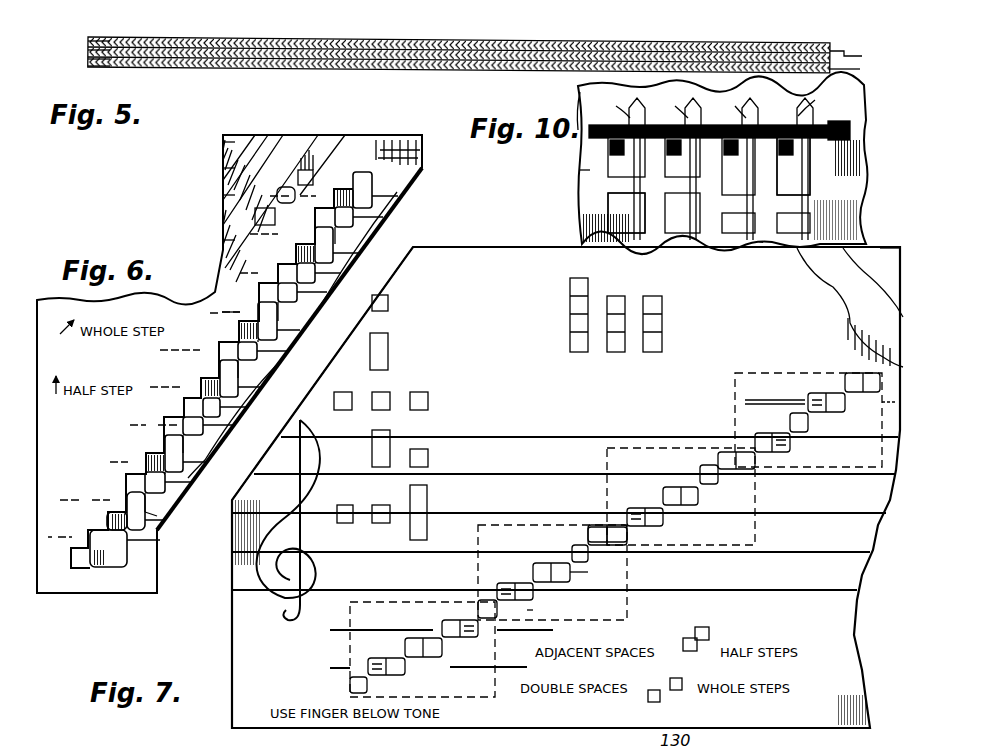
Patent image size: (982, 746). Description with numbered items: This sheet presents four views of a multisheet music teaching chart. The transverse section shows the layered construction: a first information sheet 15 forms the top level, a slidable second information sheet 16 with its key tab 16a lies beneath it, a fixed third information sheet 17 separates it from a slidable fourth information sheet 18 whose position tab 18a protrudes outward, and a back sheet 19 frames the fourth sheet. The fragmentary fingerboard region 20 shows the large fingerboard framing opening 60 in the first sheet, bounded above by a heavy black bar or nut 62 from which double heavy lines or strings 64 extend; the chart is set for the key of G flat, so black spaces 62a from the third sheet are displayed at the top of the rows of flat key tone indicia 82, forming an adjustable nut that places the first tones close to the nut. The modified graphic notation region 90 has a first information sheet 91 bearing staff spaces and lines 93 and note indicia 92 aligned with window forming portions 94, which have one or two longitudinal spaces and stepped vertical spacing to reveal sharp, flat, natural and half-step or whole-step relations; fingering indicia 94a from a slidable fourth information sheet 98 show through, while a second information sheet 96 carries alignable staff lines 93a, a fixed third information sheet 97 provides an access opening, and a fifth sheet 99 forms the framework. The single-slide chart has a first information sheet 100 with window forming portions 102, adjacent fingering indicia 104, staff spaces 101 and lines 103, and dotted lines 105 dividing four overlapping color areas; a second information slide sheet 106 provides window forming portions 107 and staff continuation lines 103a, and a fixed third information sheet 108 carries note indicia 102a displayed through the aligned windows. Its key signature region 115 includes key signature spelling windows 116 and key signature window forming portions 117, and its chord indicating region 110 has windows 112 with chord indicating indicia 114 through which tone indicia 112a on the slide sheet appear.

In FIG. 5, the first information sheet 15 is at (88, 39).
In FIG. 5, the second information sheet 16 is at (88, 44).
In FIG. 5, the third information sheet 17 is at (88, 52).
In FIG. 5, the fourth information sheet 18 is at (88, 60).
In FIG. 10, the fourth information sheet 18 is at (580, 170).
In FIG. 5, the back sheet 19 is at (88, 66).
In FIG. 5, the key tab 16a is at (862, 56).
In FIG. 5, the position tab 18a is at (860, 69).
In FIG. 10, the fingerboard region 20 is at (576, 84).
In FIG. 10, the fingerboard framing opening 60 is at (838, 214).
In FIG. 10, the nut 62 is at (592, 88).
In FIG. 10, the black spaces 62a is at (610, 146).
In FIG. 10, the strings 64 is at (808, 116).
In FIG. 10, the flat key tone indicia 82 is at (610, 200).
In FIG. 6, the graphic notation region 90 is at (348, 133).
In FIG. 6, the staff lines 93a is at (334, 188).
In FIG. 6, the fifth sheet 99 is at (223, 142).
In FIG. 6, the fourth information sheet 98 is at (223, 168).
In FIG. 6, the third information sheet 97 is at (223, 195).
In FIG. 6, the second information sheet 96 is at (223, 240).
In FIG. 6, the fingering indicia 94a is at (240, 312).
In FIG. 6, the first information sheet 91 is at (150, 522).
In FIG. 6, the staff spaces and lines 93 is at (158, 554).
In FIG. 6, the note indicia 92 is at (62, 560).
In FIG. 6, the window forming portions 94 is at (136, 562).
In FIG. 7, the first information sheet 100 is at (607, 433).
In FIG. 7, the second information slide sheet 106 is at (840, 303).
In FIG. 7, the third information sheet 108 is at (883, 250).
In FIG. 7, the key signature region 115 is at (482, 314).
In FIG. 7, the key signature spelling windows 116 is at (426, 392).
In FIG. 7, the key signature window forming portions 117 is at (428, 490).
In FIG. 7, the chord indicating region 110 is at (589, 315).
In FIG. 7, the windows 112 is at (570, 286).
In FIG. 7, the tone indicia 112a is at (570, 304).
In FIG. 7, the chord indicating indicia 114 is at (752, 290).
In FIG. 7, the lines 103 is at (832, 480).
In FIG. 7, the note indicia 102a is at (665, 532).
In FIG. 7, the spaces 101 is at (848, 537).
In FIG. 7, the dotted lines 105 is at (627, 612).
In FIG. 7, the fingering indicia 104 is at (527, 610).
In FIG. 7, the window forming portions 107 is at (560, 582).
In FIG. 7, the staff continuation lines 103a is at (510, 588).
In FIG. 7, the window forming portions 102 is at (425, 675).